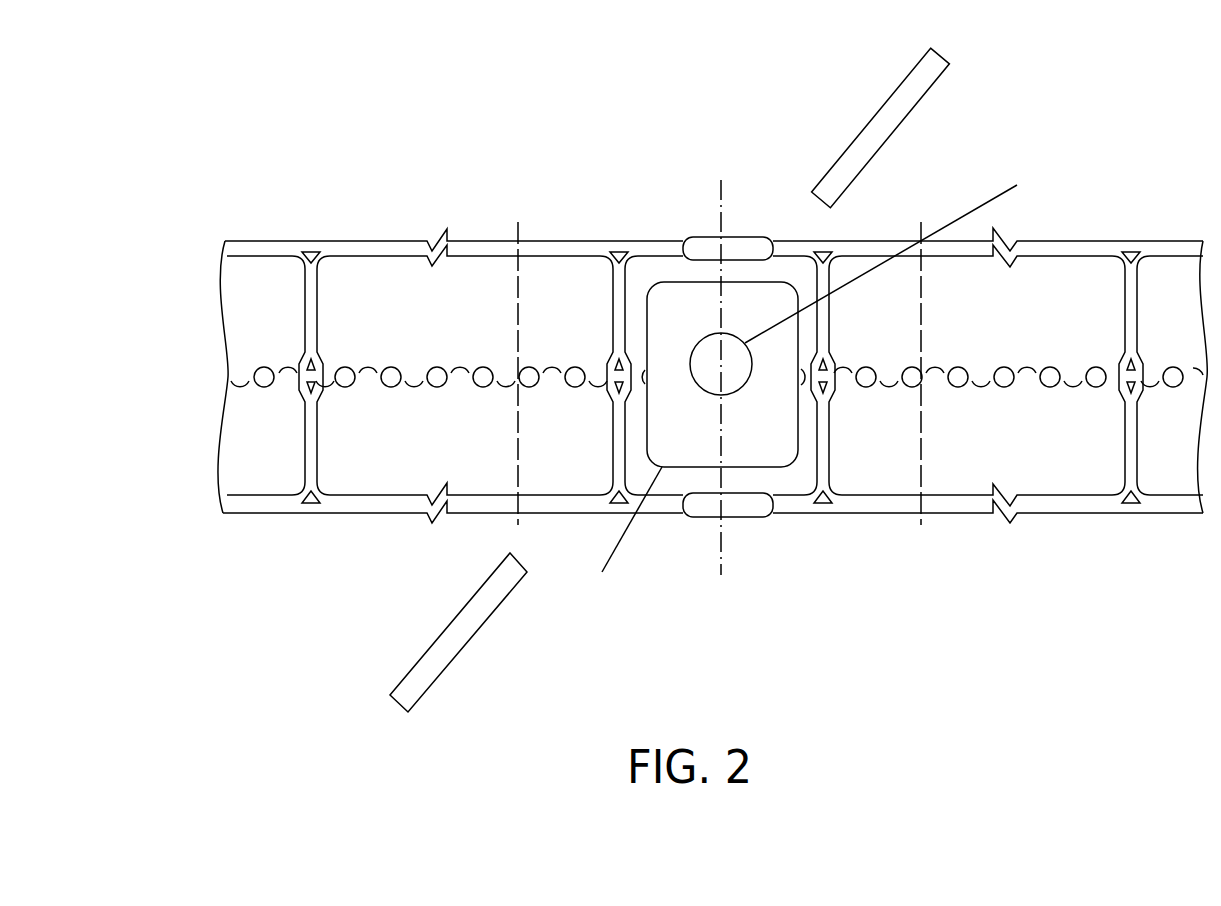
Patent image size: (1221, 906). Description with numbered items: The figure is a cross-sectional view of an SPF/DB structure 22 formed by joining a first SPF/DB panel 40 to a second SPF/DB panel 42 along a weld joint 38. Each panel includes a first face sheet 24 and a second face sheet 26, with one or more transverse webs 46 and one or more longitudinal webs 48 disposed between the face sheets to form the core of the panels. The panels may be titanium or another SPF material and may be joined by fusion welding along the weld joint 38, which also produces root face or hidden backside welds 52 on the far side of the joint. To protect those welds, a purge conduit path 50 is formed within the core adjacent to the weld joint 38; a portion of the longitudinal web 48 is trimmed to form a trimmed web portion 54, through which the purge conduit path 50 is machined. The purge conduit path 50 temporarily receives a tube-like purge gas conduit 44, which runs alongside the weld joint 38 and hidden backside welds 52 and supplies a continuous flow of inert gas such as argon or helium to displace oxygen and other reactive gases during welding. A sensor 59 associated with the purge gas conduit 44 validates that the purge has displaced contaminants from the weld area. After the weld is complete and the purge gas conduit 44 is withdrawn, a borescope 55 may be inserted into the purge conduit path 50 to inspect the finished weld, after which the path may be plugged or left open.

The SPF/DB structure 22 is at (477, 96).
The first face sheet 24 is at (565, 250).
The second face sheet 26 is at (962, 512).
The weld joint 38 is at (718, 245).
The first SPF/DB panel 40 is at (1093, 248).
The second SPF/DB panel 42 is at (263, 248).
The purge gas conduit 44 is at (980, 204).
The transverse web 46 is at (345, 276).
The longitudinal web 48 is at (822, 457).
The purge conduit path 50 is at (697, 348).
The hidden backside welds 52 is at (762, 438).
The trimmed web portion 54 is at (620, 540).
The borescope 55 is at (470, 640).
The sensor 59 is at (868, 118).